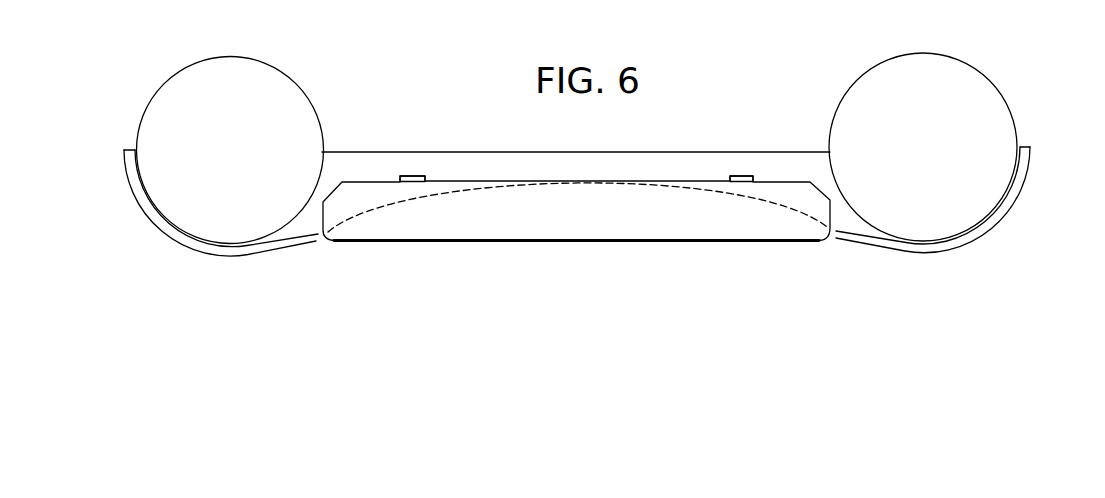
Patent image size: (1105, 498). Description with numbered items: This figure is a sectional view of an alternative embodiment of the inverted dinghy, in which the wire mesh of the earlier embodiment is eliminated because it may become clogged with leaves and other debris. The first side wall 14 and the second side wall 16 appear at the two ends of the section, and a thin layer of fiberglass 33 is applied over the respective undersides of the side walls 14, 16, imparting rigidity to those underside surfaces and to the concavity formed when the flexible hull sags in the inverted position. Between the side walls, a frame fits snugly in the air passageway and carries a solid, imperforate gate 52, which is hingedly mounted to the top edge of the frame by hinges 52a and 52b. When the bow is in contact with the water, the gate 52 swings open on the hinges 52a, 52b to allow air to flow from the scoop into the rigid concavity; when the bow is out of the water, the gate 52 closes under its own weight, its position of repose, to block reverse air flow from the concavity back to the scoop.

The second side wall 16 is at (243, 164).
The first side wall 14 is at (946, 160).
The thin layer of fiberglass 33 is at (145, 213).
The solid, imperforate gate 52 is at (788, 202).
The hinge 52a is at (414, 174).
The hinge 52b is at (731, 174).